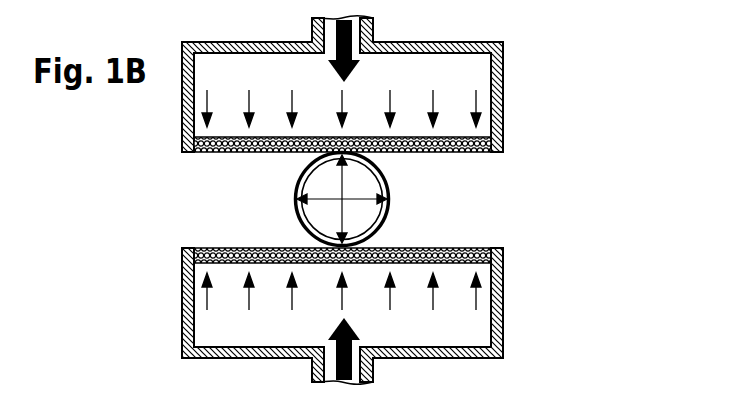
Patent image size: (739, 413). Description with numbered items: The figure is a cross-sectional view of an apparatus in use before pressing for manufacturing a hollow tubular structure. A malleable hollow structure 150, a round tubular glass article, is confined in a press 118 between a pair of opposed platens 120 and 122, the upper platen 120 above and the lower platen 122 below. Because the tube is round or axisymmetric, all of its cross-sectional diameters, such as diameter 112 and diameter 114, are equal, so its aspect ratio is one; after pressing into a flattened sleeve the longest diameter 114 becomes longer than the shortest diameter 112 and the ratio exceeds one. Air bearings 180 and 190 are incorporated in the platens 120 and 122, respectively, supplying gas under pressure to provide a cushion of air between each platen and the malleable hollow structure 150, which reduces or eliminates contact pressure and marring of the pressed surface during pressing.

The press 118 is at (580, 110).
The platen 120 is at (503, 80).
The platen 122 is at (503, 275).
The air bearing 180 is at (480, 152).
The air bearing 190 is at (472, 248).
The malleable hollow structure 150 is at (386, 177).
The diameter 112 is at (342, 213).
The diameter 114 is at (322, 196).